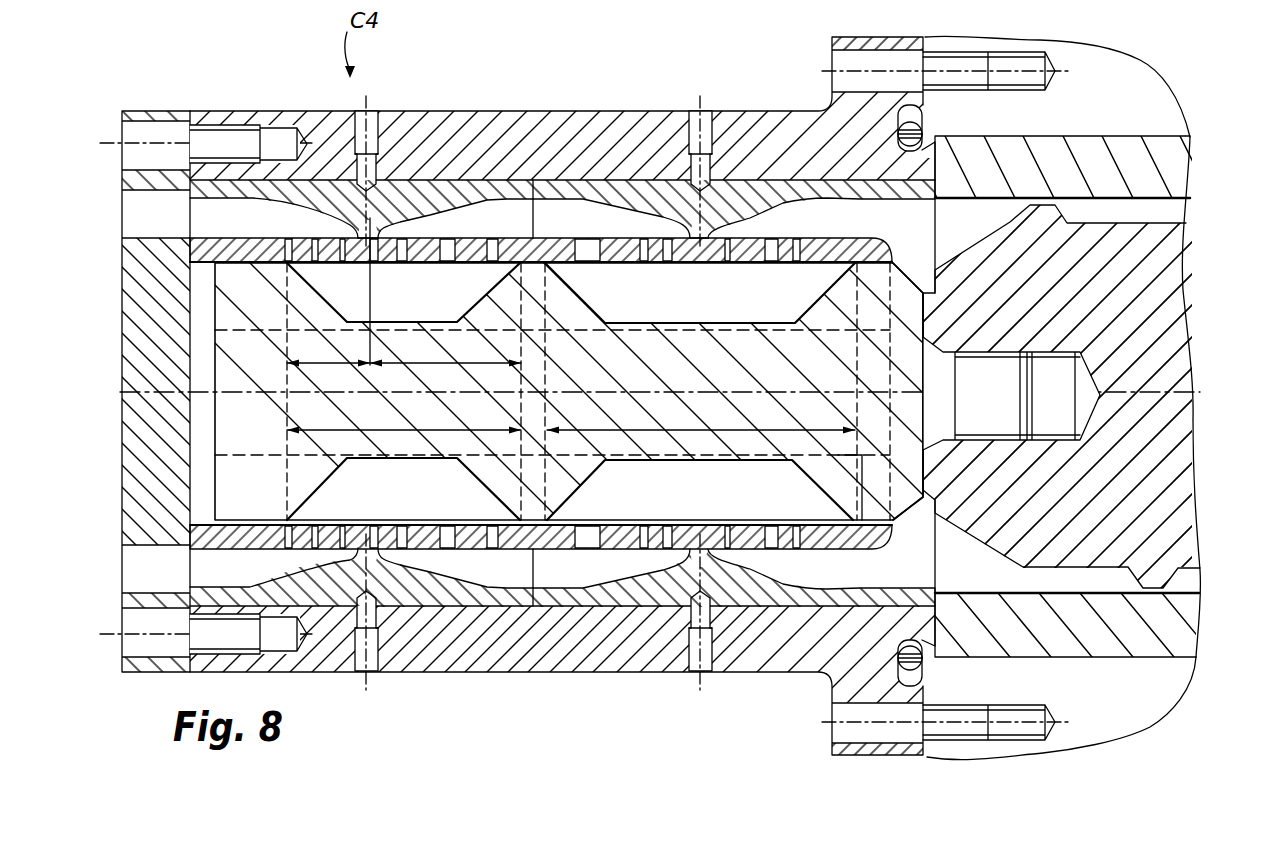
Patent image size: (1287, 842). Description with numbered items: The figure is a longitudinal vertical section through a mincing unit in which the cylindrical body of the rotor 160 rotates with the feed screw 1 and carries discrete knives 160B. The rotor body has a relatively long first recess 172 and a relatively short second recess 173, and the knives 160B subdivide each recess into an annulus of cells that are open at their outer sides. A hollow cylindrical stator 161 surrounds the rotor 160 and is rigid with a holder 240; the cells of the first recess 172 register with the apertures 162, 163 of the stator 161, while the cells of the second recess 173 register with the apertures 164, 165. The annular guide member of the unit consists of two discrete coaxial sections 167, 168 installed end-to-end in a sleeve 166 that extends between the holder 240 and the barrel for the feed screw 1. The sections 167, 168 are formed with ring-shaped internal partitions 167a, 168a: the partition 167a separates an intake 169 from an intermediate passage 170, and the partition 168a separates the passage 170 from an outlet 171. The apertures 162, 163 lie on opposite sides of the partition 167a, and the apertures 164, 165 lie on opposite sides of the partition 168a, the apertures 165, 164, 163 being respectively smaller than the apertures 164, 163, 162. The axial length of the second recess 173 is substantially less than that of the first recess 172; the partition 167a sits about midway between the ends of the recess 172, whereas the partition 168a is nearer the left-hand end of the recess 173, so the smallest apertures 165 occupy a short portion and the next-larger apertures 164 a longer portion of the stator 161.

The feed screw 1 is at (1120, 270).
The rotor 160 is at (640, 420).
The knives 160B is at (880, 285).
The stator 161 is at (553, 549).
The apertures 162 is at (825, 545).
The apertures 163 is at (667, 548).
The apertures 164 is at (497, 552).
The apertures 165 is at (293, 548).
The sleeve 166 is at (563, 127).
The guide member section 167 is at (625, 190).
The partition 167a is at (735, 232).
The guide member section 168 is at (402, 200).
The partition 168a is at (398, 229).
The intake 169 is at (867, 213).
The intermediate passage 170 is at (490, 217).
The outlet 171 is at (212, 217).
The first recess 172 is at (737, 498).
The second recess 173 is at (442, 498).
The holder 240 is at (138, 177).